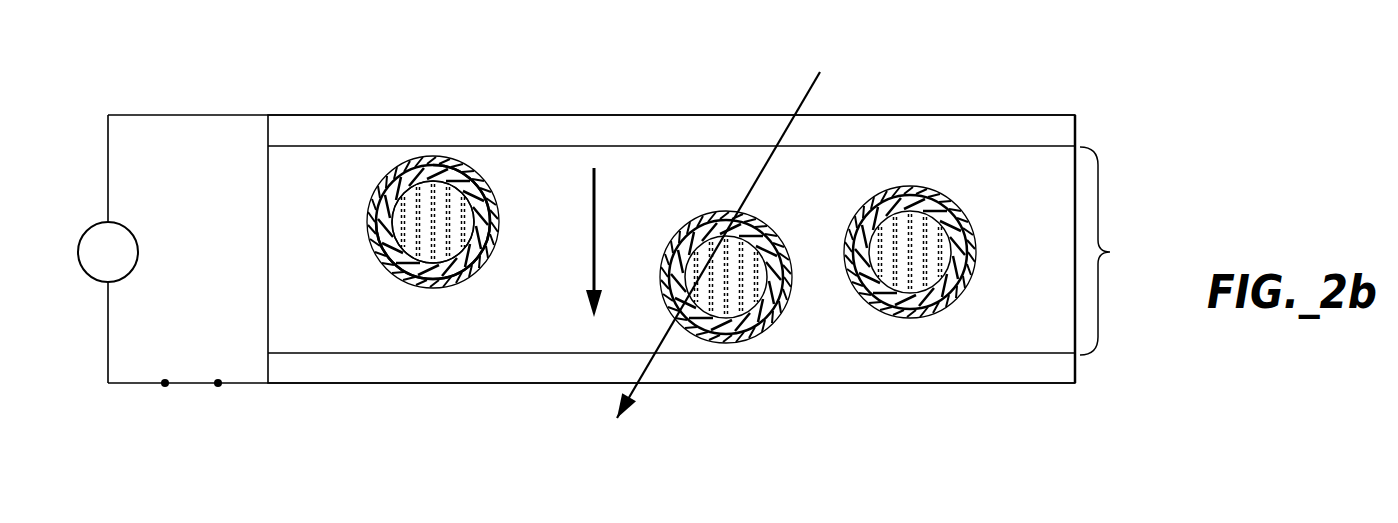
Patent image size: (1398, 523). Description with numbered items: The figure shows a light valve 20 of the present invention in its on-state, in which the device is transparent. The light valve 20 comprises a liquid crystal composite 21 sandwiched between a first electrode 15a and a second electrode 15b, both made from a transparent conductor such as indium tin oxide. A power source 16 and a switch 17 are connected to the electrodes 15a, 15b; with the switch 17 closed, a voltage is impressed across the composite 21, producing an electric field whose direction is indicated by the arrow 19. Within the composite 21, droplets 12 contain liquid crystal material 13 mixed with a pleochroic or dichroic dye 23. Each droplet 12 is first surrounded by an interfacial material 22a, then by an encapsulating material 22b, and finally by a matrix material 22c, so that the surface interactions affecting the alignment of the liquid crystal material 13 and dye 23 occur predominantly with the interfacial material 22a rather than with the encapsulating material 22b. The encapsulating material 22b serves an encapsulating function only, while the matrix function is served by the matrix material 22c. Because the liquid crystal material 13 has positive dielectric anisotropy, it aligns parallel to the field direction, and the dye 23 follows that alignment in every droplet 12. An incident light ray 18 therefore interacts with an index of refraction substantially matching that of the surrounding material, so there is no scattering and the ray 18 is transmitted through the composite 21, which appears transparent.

The droplets 12 is at (490, 223).
The liquid crystal material 13 is at (407, 287).
The first electrode 15a is at (958, 115).
The second electrode 15b is at (1053, 375).
The power source 16 is at (130, 232).
The switch 17 is at (195, 383).
The incident light ray 18 is at (807, 95).
The arrow 19 is at (597, 215).
The light valve 20 is at (1122, 128).
The liquid crystal composite 21 is at (1112, 250).
The interfacial material 22a is at (477, 190).
The encapsulating material 22b is at (483, 272).
The matrix material 22c is at (643, 172).
The dye 23 is at (460, 283).